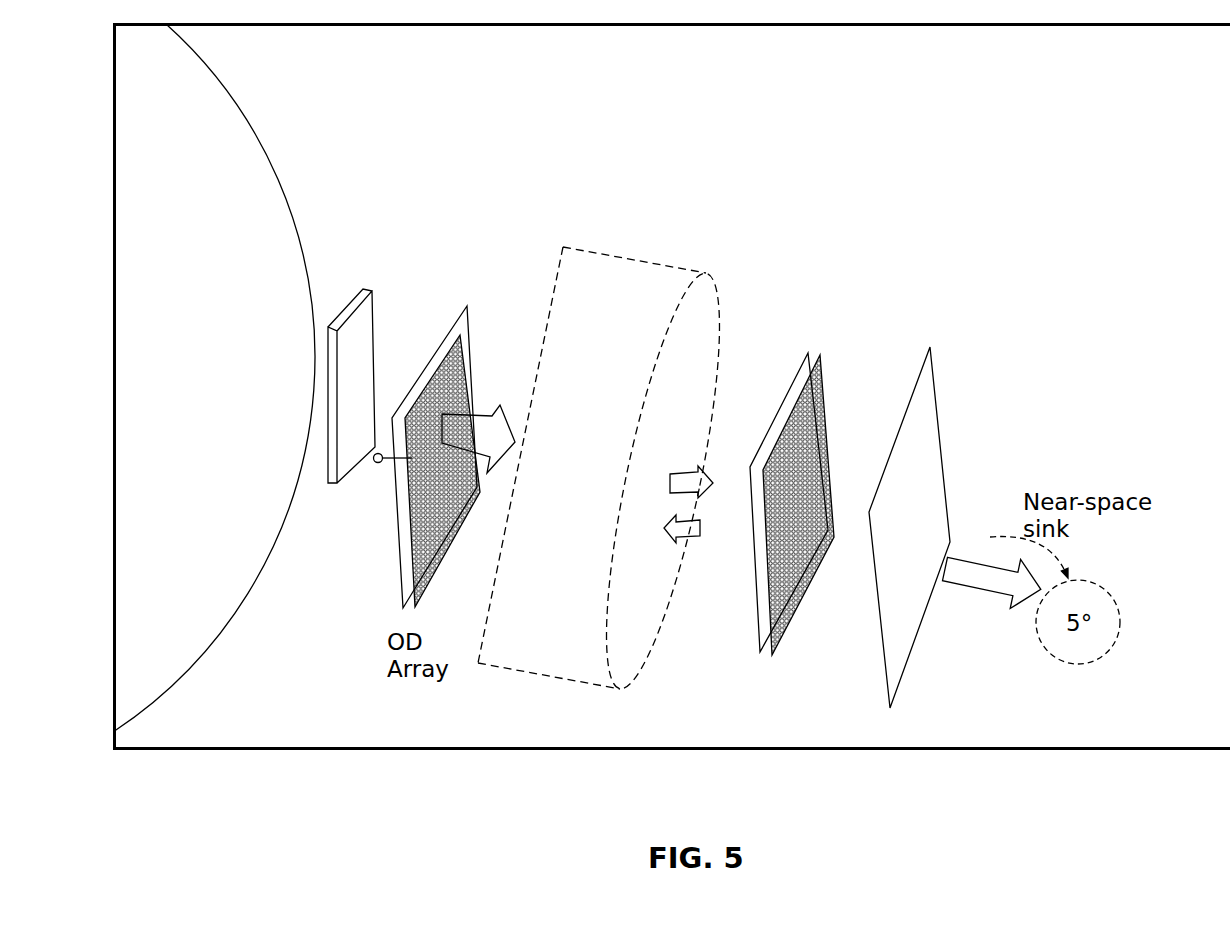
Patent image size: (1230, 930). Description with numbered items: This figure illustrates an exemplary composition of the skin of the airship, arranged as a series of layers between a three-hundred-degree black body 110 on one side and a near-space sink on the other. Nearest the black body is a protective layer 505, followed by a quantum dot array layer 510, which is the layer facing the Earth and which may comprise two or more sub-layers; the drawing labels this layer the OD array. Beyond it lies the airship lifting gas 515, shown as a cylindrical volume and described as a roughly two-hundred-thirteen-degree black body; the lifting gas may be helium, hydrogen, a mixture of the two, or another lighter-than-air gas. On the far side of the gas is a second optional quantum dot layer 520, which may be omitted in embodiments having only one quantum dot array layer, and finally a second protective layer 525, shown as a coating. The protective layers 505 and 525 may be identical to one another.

The 300° black body 110 is at (208, 417).
The protective layer 505 is at (363, 289).
The quantum dot array layer 510 is at (455, 322).
The airship lifting gas 515 is at (630, 262).
The second optional quantum dot layer 520 is at (808, 353).
The second protective layer 525 is at (930, 347).